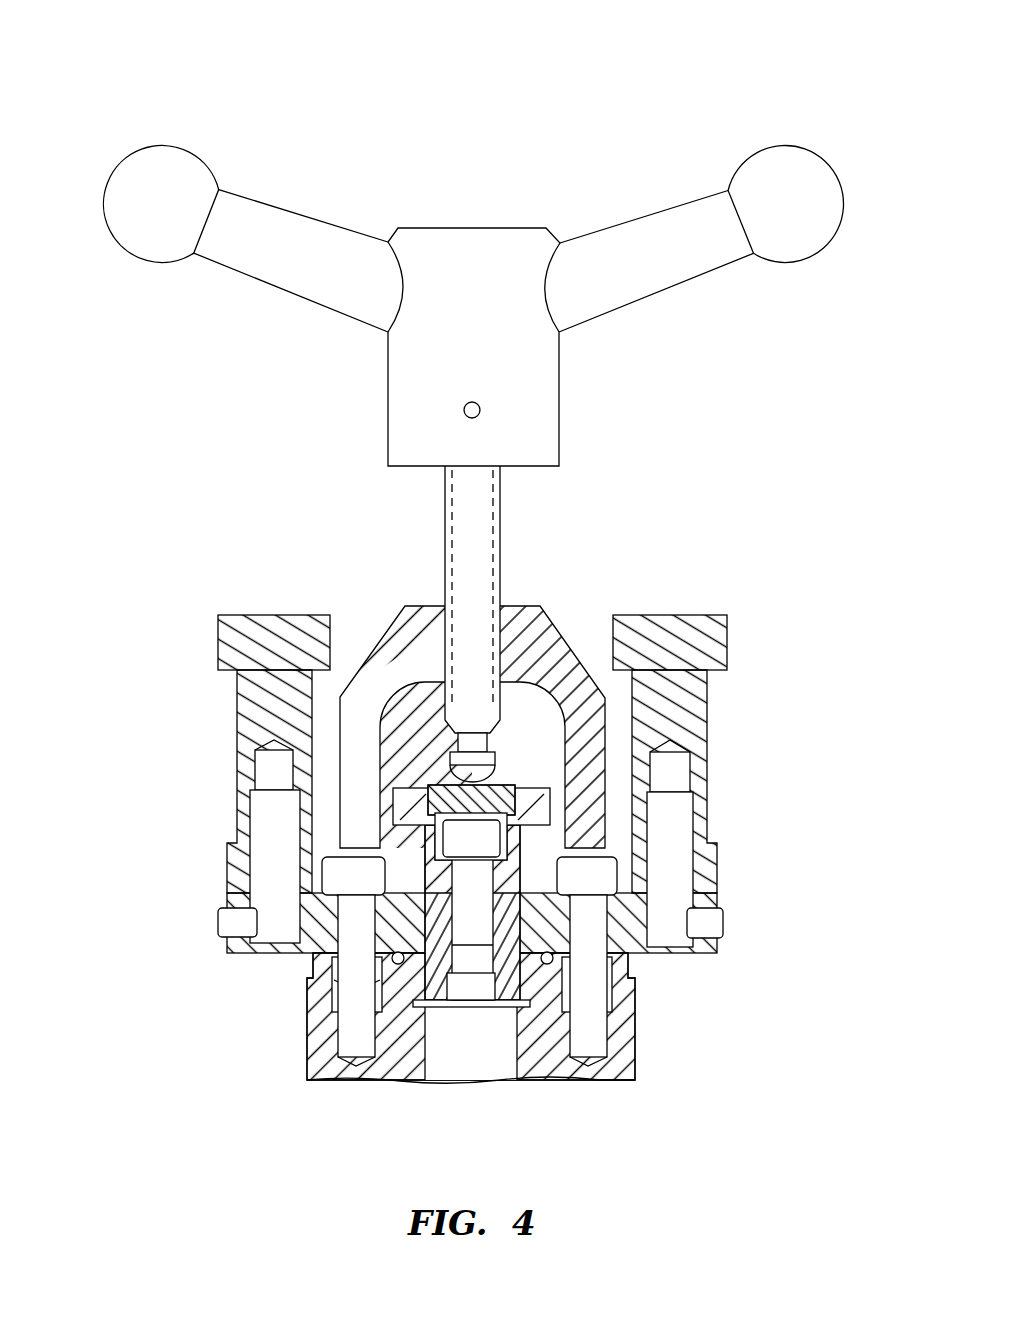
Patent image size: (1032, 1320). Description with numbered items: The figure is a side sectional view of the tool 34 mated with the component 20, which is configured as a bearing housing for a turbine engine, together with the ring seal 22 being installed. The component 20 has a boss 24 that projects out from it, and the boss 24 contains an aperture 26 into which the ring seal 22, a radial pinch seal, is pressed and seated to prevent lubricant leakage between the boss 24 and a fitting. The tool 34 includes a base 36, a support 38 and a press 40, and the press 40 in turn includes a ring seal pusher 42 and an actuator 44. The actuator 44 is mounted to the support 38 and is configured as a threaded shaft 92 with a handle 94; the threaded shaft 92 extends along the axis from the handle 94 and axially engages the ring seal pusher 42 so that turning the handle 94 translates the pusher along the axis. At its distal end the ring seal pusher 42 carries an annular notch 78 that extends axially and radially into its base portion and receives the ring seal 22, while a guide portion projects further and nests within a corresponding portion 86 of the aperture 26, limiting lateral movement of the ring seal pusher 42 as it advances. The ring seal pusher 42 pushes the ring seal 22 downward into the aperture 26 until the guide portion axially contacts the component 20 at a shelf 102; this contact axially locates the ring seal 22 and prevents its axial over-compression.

The component 20 is at (517, 1043).
The ring seal 22 is at (340, 985).
The boss 24 is at (637, 1053).
The aperture 26 is at (463, 1047).
The tool 34 is at (473, 248).
The base 36 is at (728, 925).
The support 38 is at (552, 617).
The press 40 is at (490, 347).
The ring seal pusher 42 is at (545, 783).
The actuator 44 is at (385, 450).
The annular notch 78 is at (550, 972).
The corresponding portion of the aperture 86 is at (418, 1013).
The threaded shaft 92 is at (500, 528).
The handle 94 is at (698, 275).
The shelf 102 is at (500, 1005).